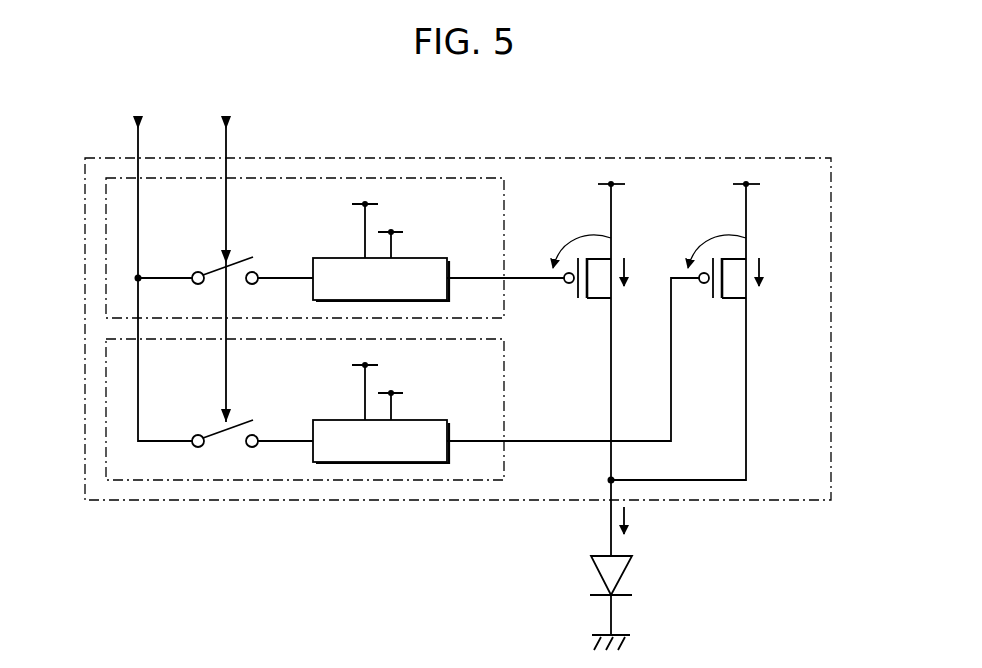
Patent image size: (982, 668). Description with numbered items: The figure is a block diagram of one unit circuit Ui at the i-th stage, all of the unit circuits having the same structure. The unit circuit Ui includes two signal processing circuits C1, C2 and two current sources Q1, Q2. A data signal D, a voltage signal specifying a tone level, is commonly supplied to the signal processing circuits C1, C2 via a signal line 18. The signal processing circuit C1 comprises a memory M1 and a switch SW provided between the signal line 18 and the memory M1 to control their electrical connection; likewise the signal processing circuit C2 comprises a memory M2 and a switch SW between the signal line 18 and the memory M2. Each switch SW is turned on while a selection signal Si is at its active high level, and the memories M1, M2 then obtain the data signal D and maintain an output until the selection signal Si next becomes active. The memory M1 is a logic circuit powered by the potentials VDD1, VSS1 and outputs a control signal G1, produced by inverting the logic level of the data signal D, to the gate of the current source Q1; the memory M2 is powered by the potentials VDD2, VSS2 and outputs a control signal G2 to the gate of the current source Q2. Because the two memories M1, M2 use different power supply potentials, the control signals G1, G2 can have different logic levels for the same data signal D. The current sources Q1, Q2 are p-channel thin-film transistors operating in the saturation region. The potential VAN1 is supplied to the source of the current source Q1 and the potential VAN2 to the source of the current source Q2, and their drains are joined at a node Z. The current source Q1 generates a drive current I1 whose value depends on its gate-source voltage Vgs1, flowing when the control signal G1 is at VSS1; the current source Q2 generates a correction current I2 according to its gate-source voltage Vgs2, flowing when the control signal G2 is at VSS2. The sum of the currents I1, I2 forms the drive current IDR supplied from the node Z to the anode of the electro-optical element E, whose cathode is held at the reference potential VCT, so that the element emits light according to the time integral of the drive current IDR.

The signal line 18 is at (137, 143).
The unit circuit Ui is at (831, 345).
The signal processing circuit C1 is at (106, 243).
The signal processing circuit C2 is at (106, 406).
The data signal D is at (161, 264).
The selection signal Si is at (227, 255).
The switch SW is at (194, 272).
The memory M1 is at (316, 257).
The memory M2 is at (316, 419).
The potential VDD1 is at (407, 226).
The potential VSS1 is at (428, 240).
The potential VDD2 is at (409, 387).
The potential VSS2 is at (430, 401).
The control signal G1 is at (505, 293).
The control signal G2 is at (573, 373).
The current source Q1 is at (598, 299).
The current source Q2 is at (733, 299).
The potential VAN1 is at (639, 184).
The potential VAN2 is at (773, 184).
The drive current I1 is at (637, 273).
The correction current I2 is at (772, 273).
The voltage between the gate and the source Vgs1 is at (569, 245).
The voltage between the gate and the source Vgs2 is at (707, 245).
The node Z is at (607, 480).
The drive current IDR is at (645, 520).
The electro-optical element E is at (597, 572).
The potential VCT is at (631, 637).